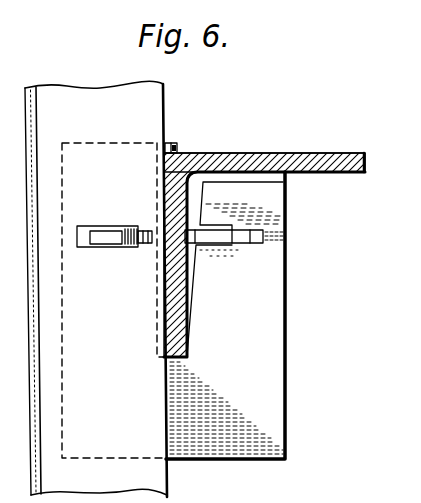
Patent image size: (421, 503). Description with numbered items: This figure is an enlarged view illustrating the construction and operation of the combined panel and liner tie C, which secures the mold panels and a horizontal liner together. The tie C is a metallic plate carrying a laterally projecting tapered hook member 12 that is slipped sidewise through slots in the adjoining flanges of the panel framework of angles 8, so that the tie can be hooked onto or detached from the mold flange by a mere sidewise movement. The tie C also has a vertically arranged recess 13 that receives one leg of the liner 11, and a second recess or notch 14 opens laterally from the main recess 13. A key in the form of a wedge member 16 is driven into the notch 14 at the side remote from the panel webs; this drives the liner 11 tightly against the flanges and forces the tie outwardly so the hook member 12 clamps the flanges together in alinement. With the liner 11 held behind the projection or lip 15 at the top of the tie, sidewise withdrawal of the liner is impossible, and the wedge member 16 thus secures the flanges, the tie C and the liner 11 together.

The angles 8 is at (96, 289).
The combined panel and liner tie C is at (264, 239).
The liner 11 is at (316, 158).
The tapered hook member 12 is at (106, 237).
The recess 13 is at (195, 193).
The notch 14 is at (218, 221).
The lip 15 is at (175, 144).
The wedge member 16 is at (243, 241).